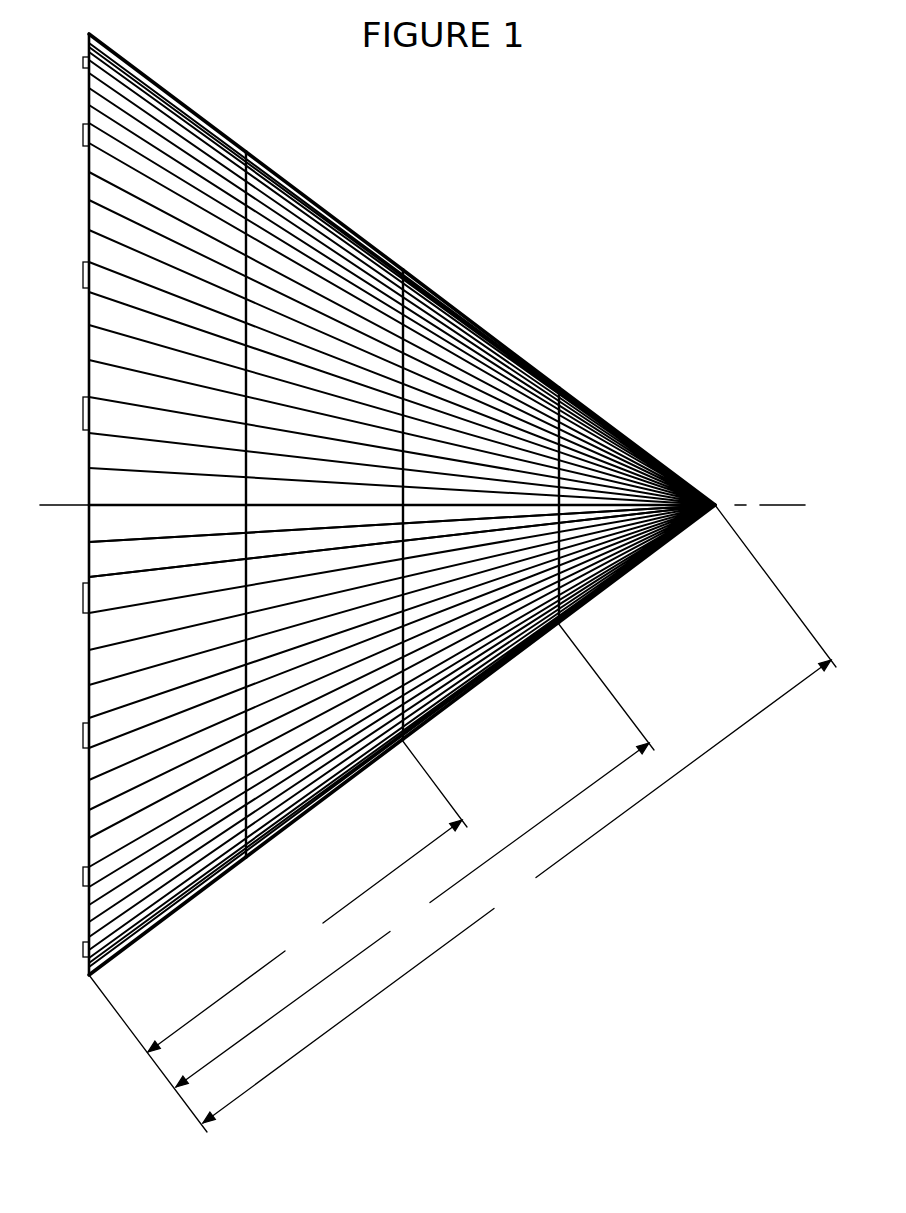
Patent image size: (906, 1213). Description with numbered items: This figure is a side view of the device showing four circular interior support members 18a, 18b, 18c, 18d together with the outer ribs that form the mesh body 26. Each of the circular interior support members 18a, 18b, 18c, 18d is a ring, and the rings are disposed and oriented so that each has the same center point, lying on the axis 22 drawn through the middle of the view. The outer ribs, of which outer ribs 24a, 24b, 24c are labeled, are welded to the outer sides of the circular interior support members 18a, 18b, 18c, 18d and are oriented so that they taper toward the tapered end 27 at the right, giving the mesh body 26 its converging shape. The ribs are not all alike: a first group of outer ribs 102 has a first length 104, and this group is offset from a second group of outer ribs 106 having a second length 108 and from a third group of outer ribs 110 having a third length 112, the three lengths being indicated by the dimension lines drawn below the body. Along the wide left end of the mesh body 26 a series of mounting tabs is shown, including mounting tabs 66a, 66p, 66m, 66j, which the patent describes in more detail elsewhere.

The circular interior support member 18a is at (93, 97).
The circular interior support member 18b is at (250, 205).
The circular interior support member 18c is at (405, 306).
The circular interior support member 18d is at (560, 414).
The axis 22 is at (68, 507).
The outer rib 24a is at (110, 503).
The outer rib 24b is at (110, 543).
The outer rib 24c is at (110, 579).
The mesh body 26 is at (596, 190).
The tapered end 27 is at (721, 500).
The mounting tab 66a is at (86, 33).
The mounting tab 66p is at (82, 276).
The mounting tab 66m is at (83, 740).
The mounting tab 66j is at (89, 977).
The first group of outer ribs 102 is at (243, 866).
The first length 104 is at (307, 896).
The second group of outer ribs 106 is at (485, 683).
The second length 108 is at (415, 855).
The third group of outer ribs 110 is at (633, 571).
The third length 112 is at (519, 814).